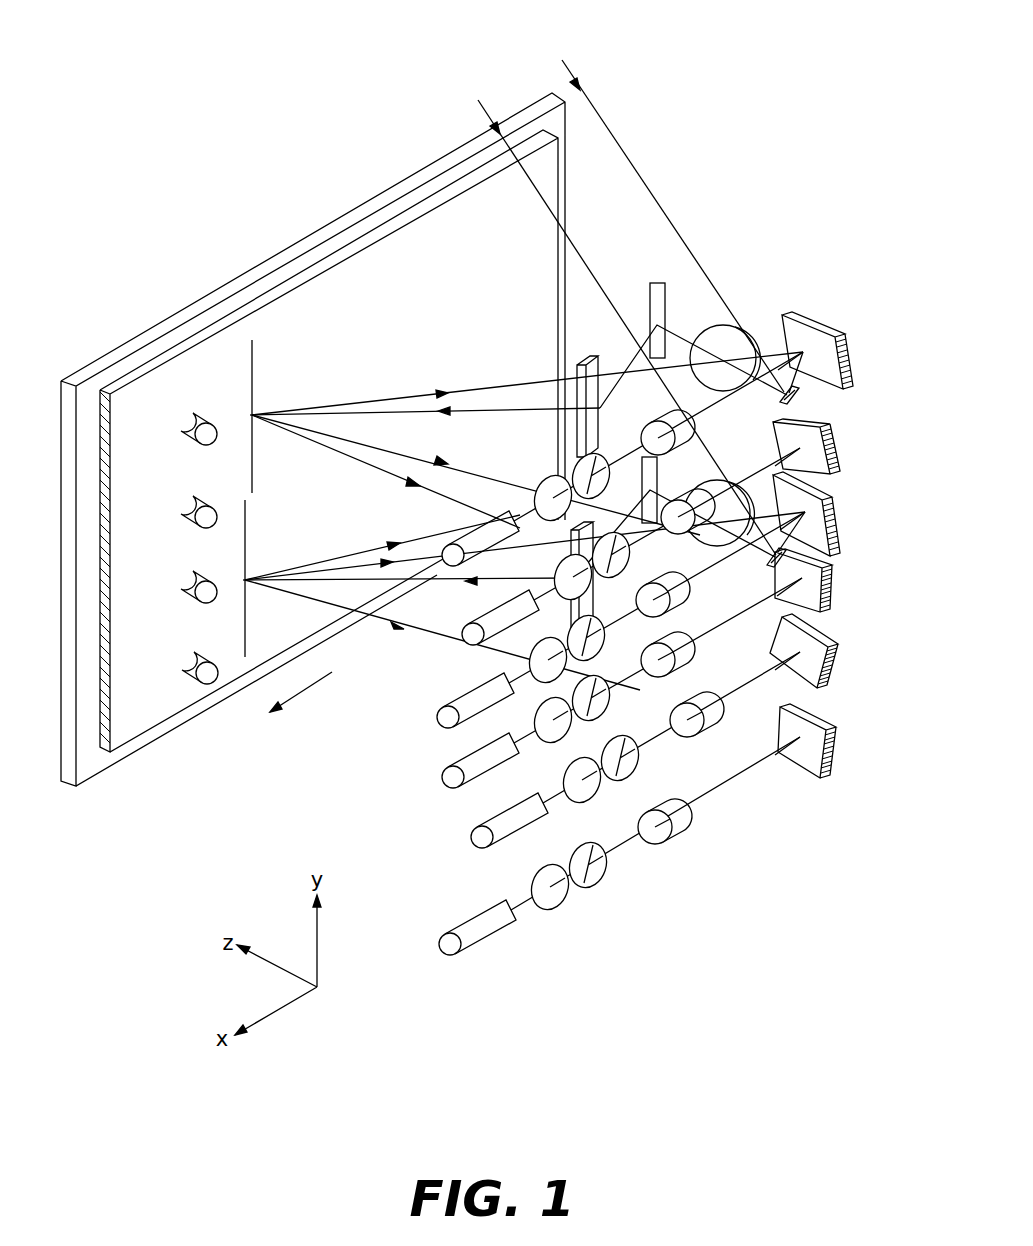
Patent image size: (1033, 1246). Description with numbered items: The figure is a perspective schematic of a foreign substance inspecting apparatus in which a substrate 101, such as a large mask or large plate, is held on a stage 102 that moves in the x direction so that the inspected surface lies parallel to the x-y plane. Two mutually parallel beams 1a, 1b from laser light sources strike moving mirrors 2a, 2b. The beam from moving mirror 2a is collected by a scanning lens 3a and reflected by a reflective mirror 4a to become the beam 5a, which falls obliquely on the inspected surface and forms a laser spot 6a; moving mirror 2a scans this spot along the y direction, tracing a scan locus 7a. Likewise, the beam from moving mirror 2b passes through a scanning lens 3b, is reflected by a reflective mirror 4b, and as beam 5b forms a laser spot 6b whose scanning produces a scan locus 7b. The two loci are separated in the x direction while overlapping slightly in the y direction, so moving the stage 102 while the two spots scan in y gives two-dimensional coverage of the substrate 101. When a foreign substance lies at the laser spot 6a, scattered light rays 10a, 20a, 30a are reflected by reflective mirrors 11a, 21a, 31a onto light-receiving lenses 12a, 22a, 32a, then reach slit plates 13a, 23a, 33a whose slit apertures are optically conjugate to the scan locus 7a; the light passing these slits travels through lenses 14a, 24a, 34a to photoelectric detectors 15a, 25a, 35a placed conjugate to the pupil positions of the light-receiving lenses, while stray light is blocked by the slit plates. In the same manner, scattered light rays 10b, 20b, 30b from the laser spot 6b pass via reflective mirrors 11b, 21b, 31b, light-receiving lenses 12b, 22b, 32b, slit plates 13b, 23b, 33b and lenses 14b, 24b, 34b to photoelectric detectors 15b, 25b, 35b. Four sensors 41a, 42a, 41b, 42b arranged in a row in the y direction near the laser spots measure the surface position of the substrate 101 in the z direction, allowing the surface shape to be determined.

The beam 1a is at (660, 212).
The beam 1b is at (617, 316).
The moving mirror 2a is at (800, 398).
The moving mirror 2b is at (787, 556).
The scanning lens 3a is at (725, 358).
The scanning lens 3b is at (719, 513).
The reflective mirror 4a is at (590, 361).
The reflective mirror 4b is at (592, 612).
The beam 5a is at (452, 418).
The beam 5b is at (455, 583).
The laser spot 6a is at (237, 407).
The laser spot 6b is at (232, 574).
The scan locus 7a is at (255, 345).
The scan locus 7b is at (247, 519).
The scattered light ray 10a is at (325, 398).
The scattered light ray 10b is at (372, 562).
The scattered light ray 20a is at (405, 457).
The scattered light ray 20b is at (298, 598).
The scattered light ray 30a is at (367, 463).
The scattered light ray 30b is at (345, 556).
The reflective mirror 11a is at (795, 318).
The reflective mirror 11b is at (836, 516).
The reflective mirror 21a is at (840, 600).
The reflective mirror 21b is at (838, 741).
The reflective mirror 31a is at (838, 670).
The reflective mirror 31b is at (841, 451).
The light-receiving lens 12a is at (652, 421).
The light-receiving lens 12b is at (690, 594).
The light-receiving lens 22a is at (700, 662).
The light-receiving lens 22b is at (690, 840).
The light-receiving lens 32a is at (705, 736).
The light-receiving lens 32b is at (690, 508).
The slit plate 13a is at (575, 462).
The slit plate 13b is at (570, 642).
The slit plate 23a is at (605, 690).
The slit plate 23b is at (610, 875).
The slit plate 33a is at (635, 768).
The slit plate 33b is at (632, 557).
The lens 14a is at (536, 488).
The lens 14b is at (530, 662).
The lens 24a is at (540, 720).
The lens 24b is at (565, 905).
The lens 34a is at (585, 805).
The lens 34b is at (555, 575).
The photoelectric detector 15a is at (470, 512).
The photoelectric detector 15b is at (440, 722).
The photoelectric detector 25a is at (445, 780).
The photoelectric detector 25b is at (488, 947).
The photoelectric detector 35a is at (470, 838).
The photoelectric detector 35b is at (465, 630).
The sensor 41a is at (185, 432).
The sensor 41b is at (185, 592).
The sensor 42a is at (185, 515).
The sensor 42b is at (186, 675).
The substrate 101 is at (400, 212).
The stage 102 is at (297, 235).